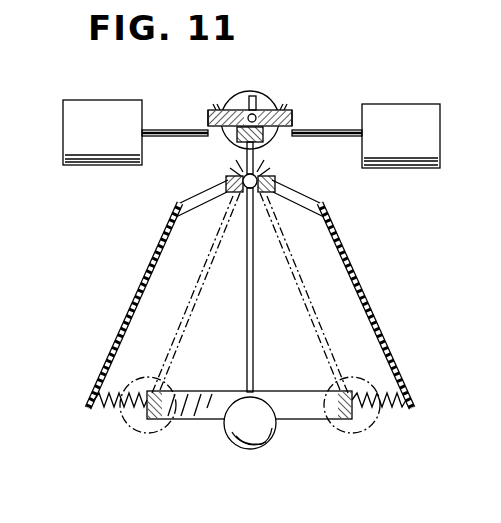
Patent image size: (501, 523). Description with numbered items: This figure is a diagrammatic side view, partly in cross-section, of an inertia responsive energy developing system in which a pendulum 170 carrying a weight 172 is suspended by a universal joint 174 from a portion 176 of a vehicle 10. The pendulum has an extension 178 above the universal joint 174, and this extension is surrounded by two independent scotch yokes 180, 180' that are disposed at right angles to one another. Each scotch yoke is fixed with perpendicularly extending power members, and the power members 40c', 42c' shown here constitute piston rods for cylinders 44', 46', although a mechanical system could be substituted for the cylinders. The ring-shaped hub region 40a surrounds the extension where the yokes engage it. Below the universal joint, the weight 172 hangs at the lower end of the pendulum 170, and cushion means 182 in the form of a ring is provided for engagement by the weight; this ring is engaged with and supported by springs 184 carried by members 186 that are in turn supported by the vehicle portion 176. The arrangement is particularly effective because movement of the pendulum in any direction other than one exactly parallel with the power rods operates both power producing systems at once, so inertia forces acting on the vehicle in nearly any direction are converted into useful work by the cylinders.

The vehicle 10 is at (192, 183).
The cylinder 44' is at (167, 102).
The cylinder 46' is at (428, 134).
The power member 40c' is at (175, 117).
The power member 42c' is at (327, 148).
The hub ring 40a is at (234, 95).
The extension 178 is at (256, 100).
The scotch yoke 180' is at (213, 91).
The scotch yoke 180 is at (325, 106).
The vehicle portion 176 is at (236, 176).
The universal joint 174 is at (258, 182).
The members 186 is at (150, 262).
The pendulum 170 is at (247, 352).
The cushion means 182 is at (302, 410).
The weight 172 is at (236, 440).
The springs 184 is at (122, 410).